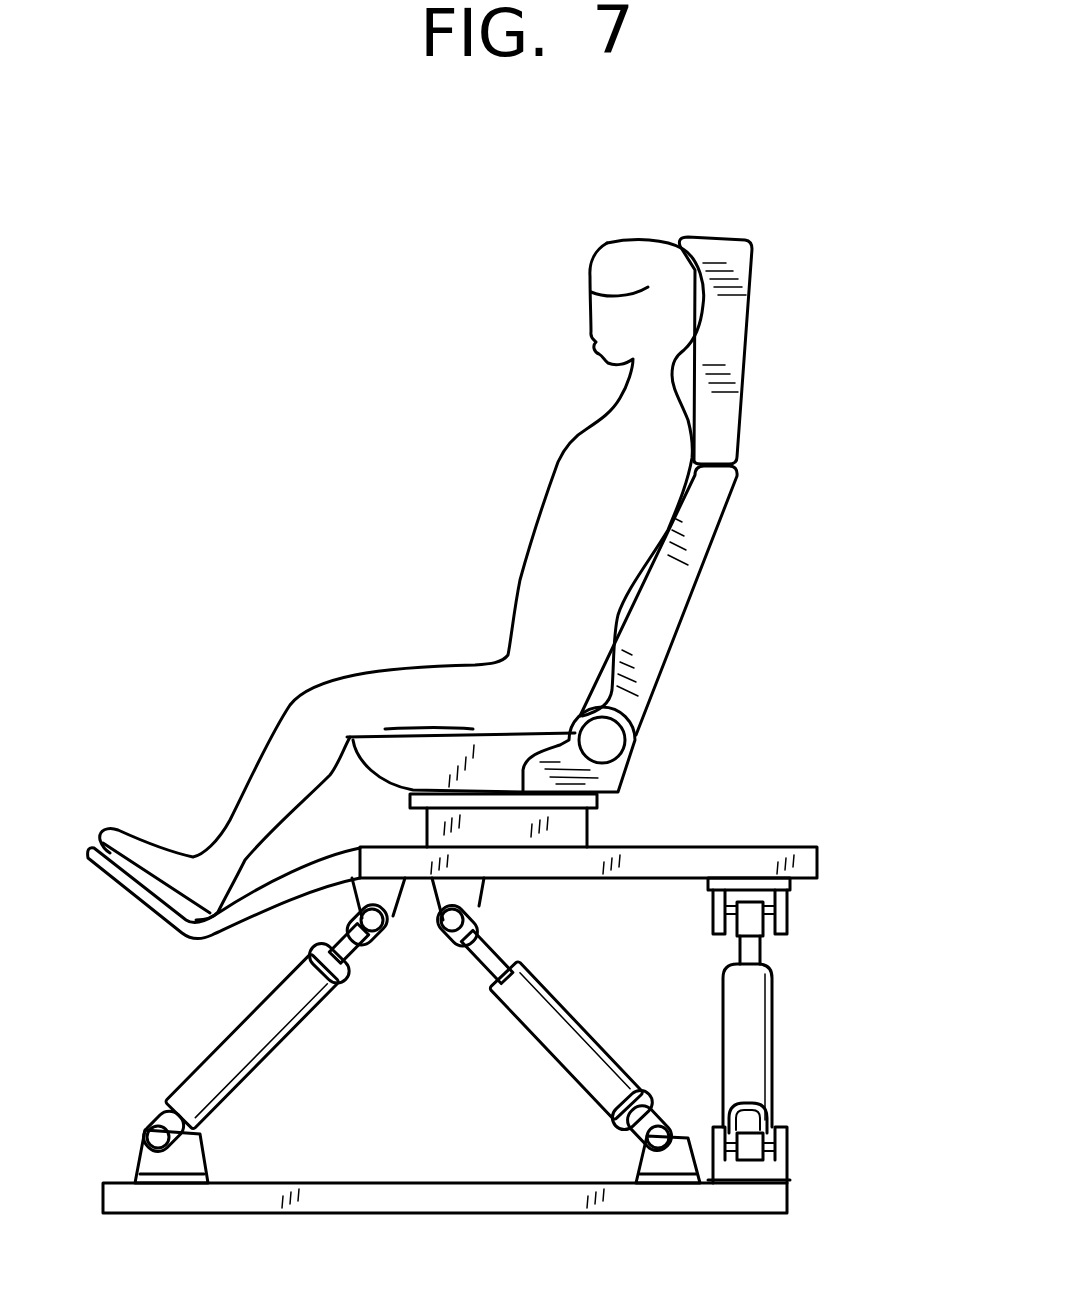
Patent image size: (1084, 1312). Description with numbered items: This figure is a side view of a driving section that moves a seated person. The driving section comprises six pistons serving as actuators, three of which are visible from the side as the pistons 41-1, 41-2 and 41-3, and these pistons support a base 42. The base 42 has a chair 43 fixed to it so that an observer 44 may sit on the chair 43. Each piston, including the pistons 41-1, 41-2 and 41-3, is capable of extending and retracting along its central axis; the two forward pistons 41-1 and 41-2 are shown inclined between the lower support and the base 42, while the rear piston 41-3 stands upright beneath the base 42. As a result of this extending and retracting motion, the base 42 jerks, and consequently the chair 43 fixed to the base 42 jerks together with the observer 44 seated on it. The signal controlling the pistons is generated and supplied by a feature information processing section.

The piston 41-1 is at (243, 1044).
The piston 41-2 is at (556, 1042).
The piston 41-3 is at (772, 1020).
The base 42 is at (715, 862).
The chair 43 is at (707, 503).
The observer 44 is at (599, 446).